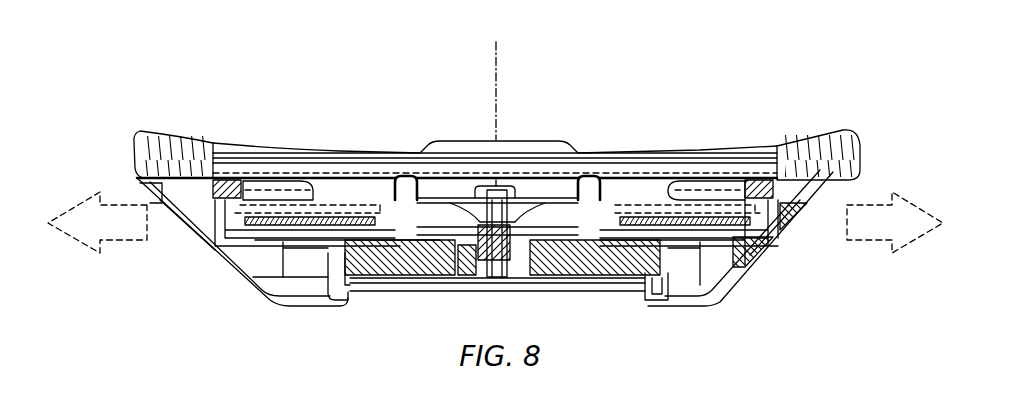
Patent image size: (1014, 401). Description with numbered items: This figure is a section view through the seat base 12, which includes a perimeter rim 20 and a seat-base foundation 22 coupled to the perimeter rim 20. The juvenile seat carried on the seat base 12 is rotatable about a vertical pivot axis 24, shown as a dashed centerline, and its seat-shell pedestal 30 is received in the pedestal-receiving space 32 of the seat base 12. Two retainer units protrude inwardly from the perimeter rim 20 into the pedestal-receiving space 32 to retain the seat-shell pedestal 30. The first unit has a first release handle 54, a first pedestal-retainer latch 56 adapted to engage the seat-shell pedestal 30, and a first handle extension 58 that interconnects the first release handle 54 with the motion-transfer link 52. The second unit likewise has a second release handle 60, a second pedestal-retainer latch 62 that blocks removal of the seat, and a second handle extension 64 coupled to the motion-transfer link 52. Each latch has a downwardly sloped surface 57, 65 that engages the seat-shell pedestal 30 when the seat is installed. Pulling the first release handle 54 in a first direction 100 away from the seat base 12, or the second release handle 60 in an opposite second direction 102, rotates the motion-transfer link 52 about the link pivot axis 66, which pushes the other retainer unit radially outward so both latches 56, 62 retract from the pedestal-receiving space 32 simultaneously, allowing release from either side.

The seat base 12 is at (731, 131).
The perimeter rim 20 is at (200, 147).
The seat-base foundation 22 is at (264, 299).
The vertical pivot axis 24 is at (496, 62).
The seat-shell pedestal 30 is at (325, 200).
The pedestal-receiving space 32 is at (633, 158).
The motion-transfer link 52 is at (517, 275).
The first release handle 54 is at (168, 218).
The first pedestal-retainer latch 56 is at (256, 175).
The downwardly sloped surface 57 is at (275, 182).
The first handle extension 58 is at (378, 253).
The second release handle 60 is at (823, 214).
The second pedestal-retainer latch 62 is at (765, 157).
The second handle extension 64 is at (650, 242).
The downwardly sloped surface 65 is at (710, 182).
The link pivot axis 66 is at (496, 108).
The first direction 100 is at (125, 242).
The second direction 102 is at (862, 242).